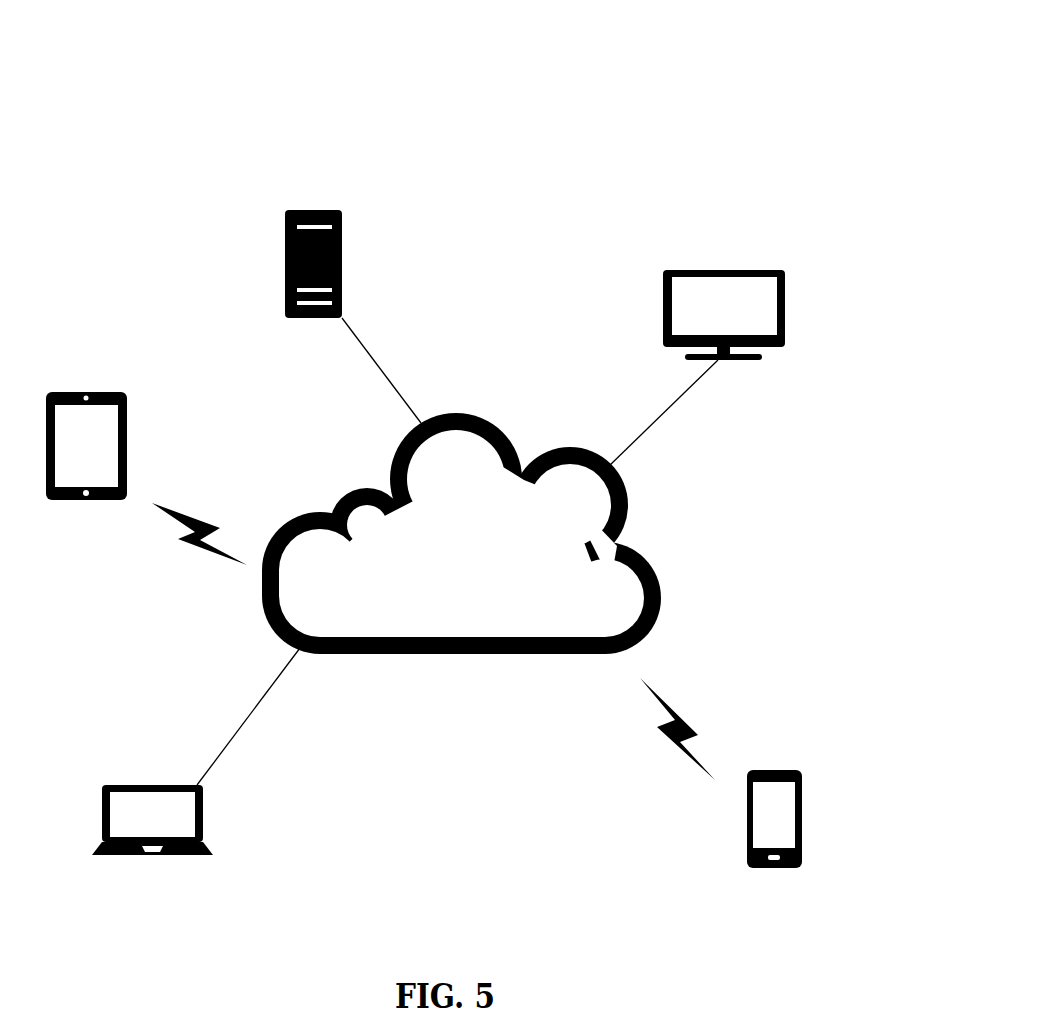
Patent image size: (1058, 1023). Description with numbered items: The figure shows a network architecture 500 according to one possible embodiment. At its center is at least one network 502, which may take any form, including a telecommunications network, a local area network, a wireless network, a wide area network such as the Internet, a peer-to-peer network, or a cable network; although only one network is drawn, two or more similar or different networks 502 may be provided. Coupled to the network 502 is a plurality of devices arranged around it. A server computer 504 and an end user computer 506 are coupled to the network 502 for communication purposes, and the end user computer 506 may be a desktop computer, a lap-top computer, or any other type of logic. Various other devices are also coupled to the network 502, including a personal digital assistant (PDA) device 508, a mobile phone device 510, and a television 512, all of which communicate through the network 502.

The network architecture 500 is at (89, 87).
The network 502 is at (472, 654).
The server computer 504 is at (312, 210).
The end user computer 506 is at (148, 785).
The personal digital assistant (PDA) device 508 is at (88, 392).
The mobile phone device 510 is at (766, 770).
The television 512 is at (727, 270).